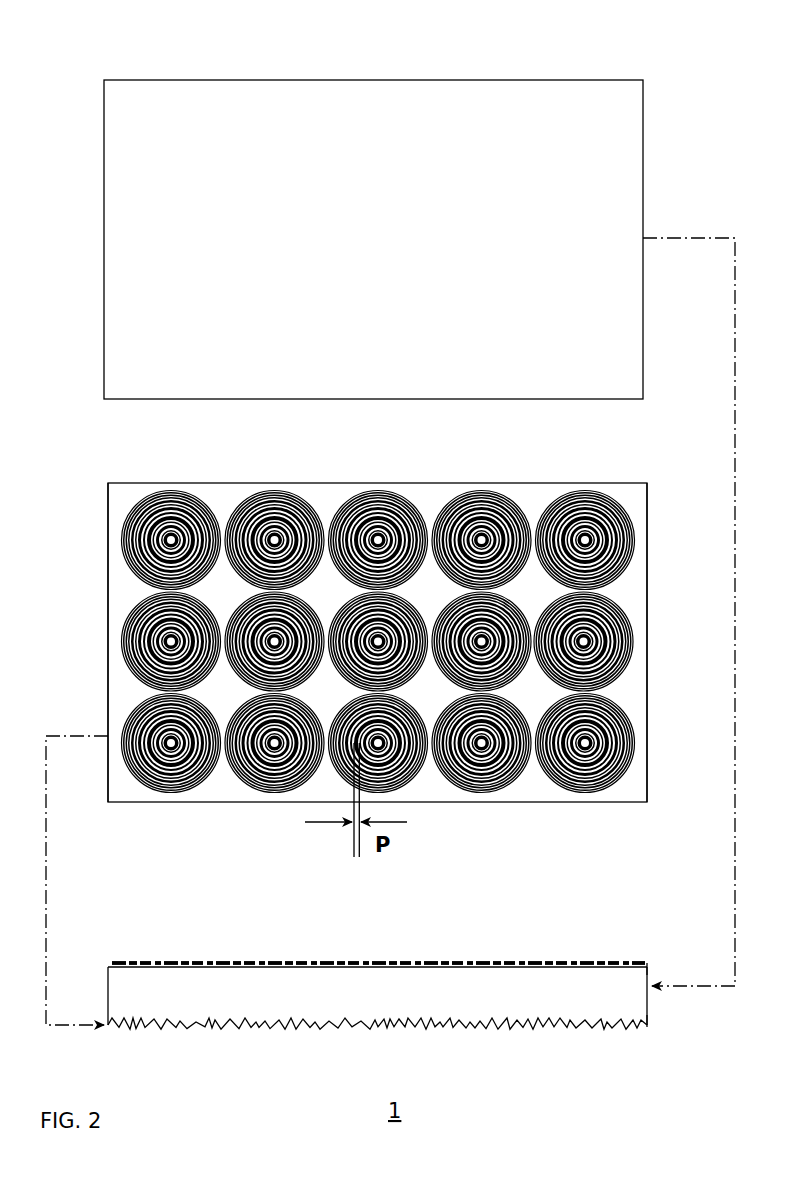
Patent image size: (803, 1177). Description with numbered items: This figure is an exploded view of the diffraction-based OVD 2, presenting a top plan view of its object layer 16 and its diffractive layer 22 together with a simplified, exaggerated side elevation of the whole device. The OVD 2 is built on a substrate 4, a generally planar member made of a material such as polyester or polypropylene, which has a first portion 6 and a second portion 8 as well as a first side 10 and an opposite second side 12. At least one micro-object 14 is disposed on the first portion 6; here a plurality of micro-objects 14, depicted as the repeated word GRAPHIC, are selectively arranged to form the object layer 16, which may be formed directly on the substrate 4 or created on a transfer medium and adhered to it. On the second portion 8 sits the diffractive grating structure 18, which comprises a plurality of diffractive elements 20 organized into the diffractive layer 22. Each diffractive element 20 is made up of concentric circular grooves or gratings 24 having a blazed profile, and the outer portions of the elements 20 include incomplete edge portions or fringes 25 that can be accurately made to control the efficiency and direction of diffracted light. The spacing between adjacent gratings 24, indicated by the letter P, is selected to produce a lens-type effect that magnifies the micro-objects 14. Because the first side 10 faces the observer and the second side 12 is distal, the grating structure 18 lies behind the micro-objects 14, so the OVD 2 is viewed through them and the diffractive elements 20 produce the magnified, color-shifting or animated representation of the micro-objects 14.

The OVD 2 is at (415, 1004).
The substrate 4 is at (637, 1002).
The first portion 6 is at (664, 970).
The second portion 8 is at (655, 1028).
The first side 10 is at (214, 966).
The second side 12 is at (318, 1027).
The micro-object 14 is at (178, 128).
The object layer 16 is at (393, 110).
The diffractive grating structure 18 is at (608, 799).
The diffractive element 20 is at (378, 532).
The diffractive layer 22 is at (618, 647).
The grating 24 is at (123, 626).
The fringe 25 is at (643, 485).